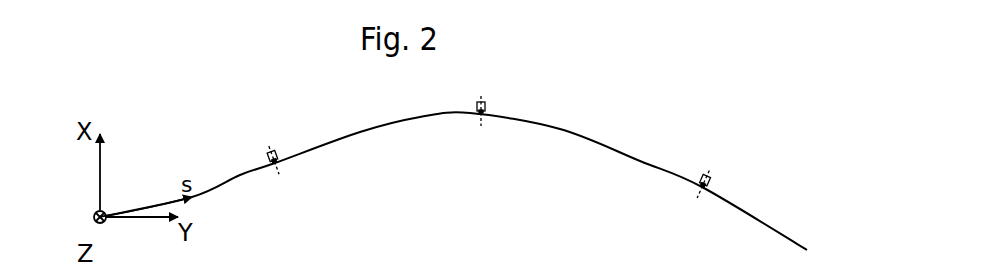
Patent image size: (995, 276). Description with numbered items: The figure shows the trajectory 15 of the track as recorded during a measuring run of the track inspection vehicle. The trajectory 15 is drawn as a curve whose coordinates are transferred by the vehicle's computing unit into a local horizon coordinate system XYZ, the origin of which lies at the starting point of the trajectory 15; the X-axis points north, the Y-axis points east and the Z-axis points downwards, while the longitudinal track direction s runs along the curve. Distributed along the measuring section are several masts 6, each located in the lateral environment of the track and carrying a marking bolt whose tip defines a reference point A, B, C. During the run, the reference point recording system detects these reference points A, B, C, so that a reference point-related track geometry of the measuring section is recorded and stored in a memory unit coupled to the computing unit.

The mast 6 is at (268, 146).
The trajectory 15 is at (328, 139).
The reference point A is at (283, 163).
The reference point B is at (483, 118).
The reference point C is at (700, 195).